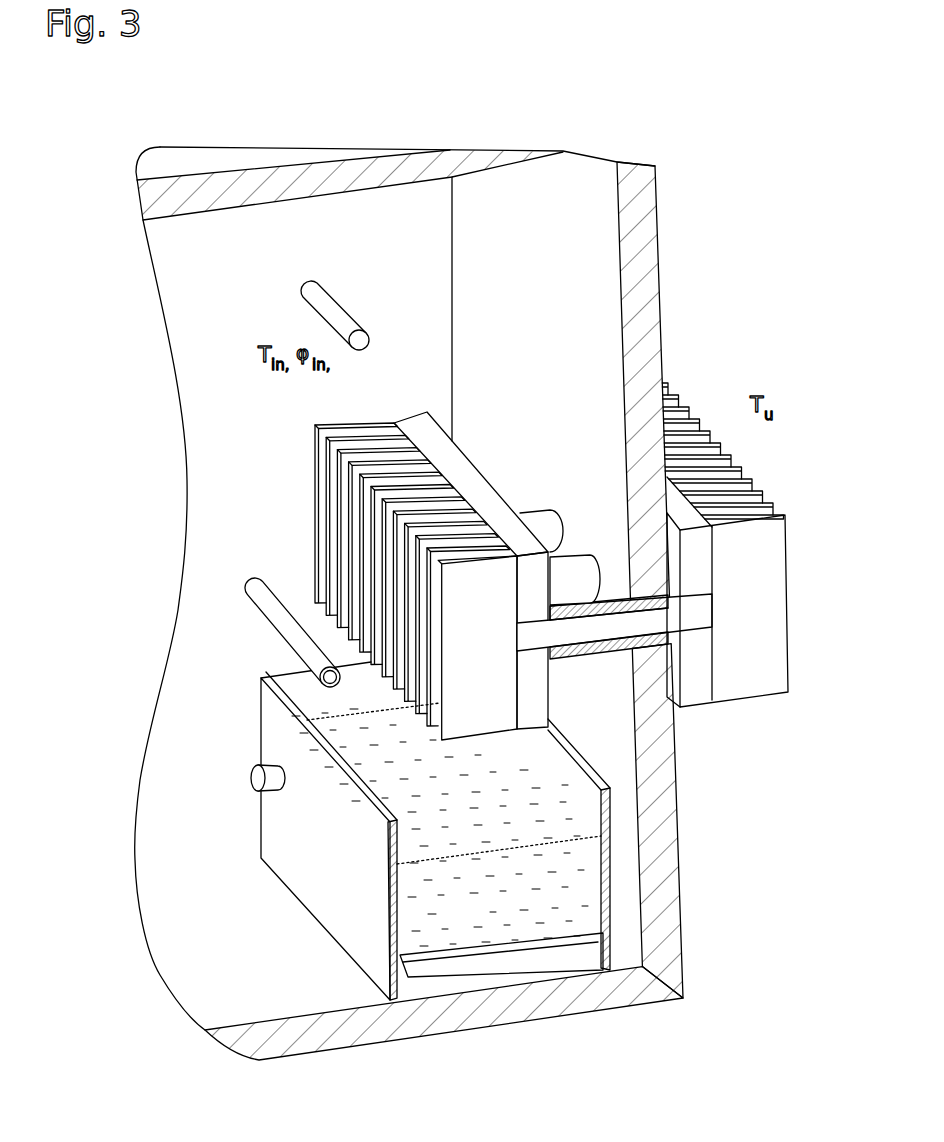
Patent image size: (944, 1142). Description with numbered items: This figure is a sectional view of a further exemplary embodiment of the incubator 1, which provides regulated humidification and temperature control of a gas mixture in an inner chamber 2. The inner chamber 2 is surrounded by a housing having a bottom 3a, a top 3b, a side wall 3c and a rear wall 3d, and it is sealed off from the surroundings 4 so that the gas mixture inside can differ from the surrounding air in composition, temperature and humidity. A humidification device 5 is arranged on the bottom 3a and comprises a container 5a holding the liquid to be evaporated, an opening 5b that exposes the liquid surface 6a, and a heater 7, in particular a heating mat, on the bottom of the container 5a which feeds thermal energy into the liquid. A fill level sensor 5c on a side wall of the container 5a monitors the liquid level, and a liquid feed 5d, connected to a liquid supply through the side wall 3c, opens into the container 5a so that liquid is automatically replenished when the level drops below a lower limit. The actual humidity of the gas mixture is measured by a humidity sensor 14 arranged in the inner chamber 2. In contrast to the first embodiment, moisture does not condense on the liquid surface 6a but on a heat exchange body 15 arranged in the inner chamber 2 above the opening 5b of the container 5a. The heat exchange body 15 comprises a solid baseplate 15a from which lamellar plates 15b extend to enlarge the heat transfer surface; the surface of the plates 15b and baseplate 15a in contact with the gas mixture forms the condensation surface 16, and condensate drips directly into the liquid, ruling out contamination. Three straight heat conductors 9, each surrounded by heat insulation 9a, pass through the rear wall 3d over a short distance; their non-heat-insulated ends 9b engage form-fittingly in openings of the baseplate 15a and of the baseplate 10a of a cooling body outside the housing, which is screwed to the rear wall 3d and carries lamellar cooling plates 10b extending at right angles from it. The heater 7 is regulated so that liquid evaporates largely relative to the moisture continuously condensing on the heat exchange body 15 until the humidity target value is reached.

The incubator 1 is at (735, 145).
The inner chamber 2 is at (271, 496).
The bottom 3a is at (636, 985).
The top 3b is at (200, 195).
The side wall 3c is at (238, 284).
The rear wall 3d is at (652, 330).
The surroundings 4 is at (719, 254).
The humidification device 5 is at (462, 837).
The container 5a is at (272, 835).
The opening 5b is at (296, 692).
The fill level sensor 5c is at (250, 780).
The liquid feed 5d is at (292, 638).
The liquid surface 6a is at (557, 829).
The heater 7 is at (443, 958).
The heat conductors 9 is at (632, 643).
The heat insulation 9a is at (533, 648).
The non-heat-insulated ends 9b is at (690, 655).
The baseplate 10a is at (698, 558).
The lamellar cooling plates 10b is at (757, 583).
The humidity sensor 14 is at (322, 318).
The heat exchange body 15 is at (410, 754).
The baseplate 15a is at (530, 703).
The lamellar plates 15b is at (480, 703).
The condensation surface 16 is at (318, 520).